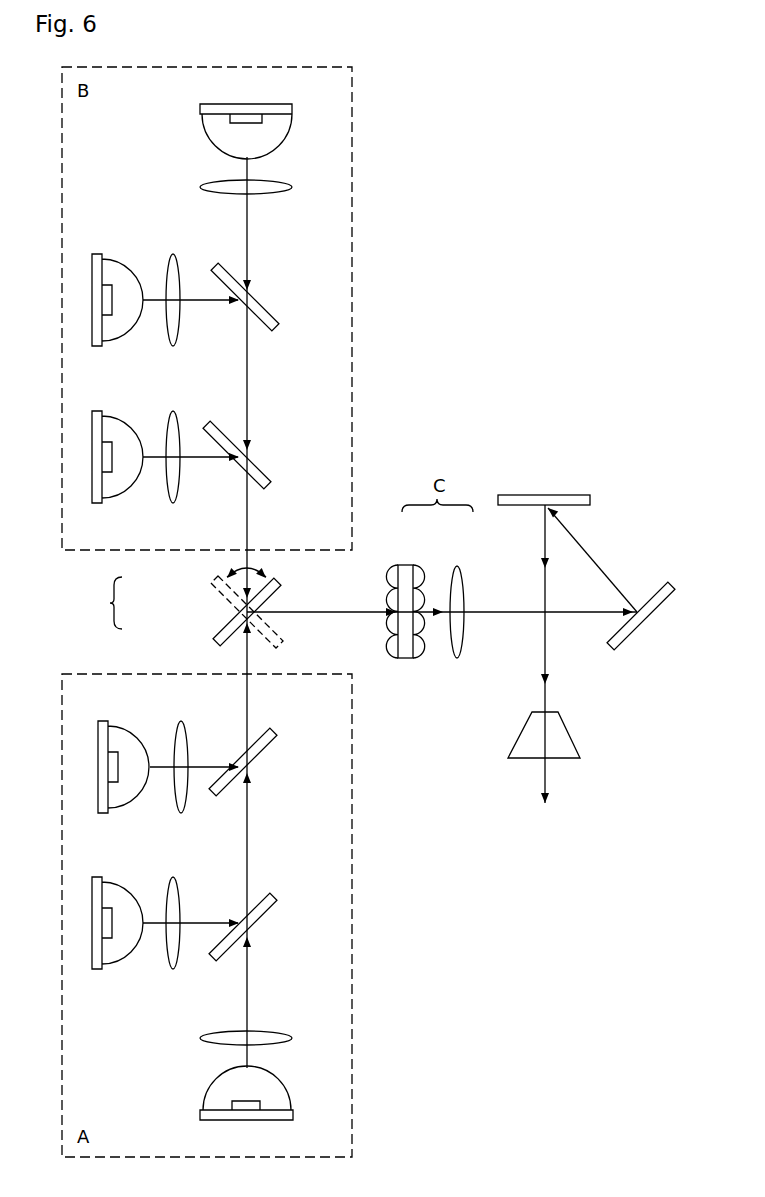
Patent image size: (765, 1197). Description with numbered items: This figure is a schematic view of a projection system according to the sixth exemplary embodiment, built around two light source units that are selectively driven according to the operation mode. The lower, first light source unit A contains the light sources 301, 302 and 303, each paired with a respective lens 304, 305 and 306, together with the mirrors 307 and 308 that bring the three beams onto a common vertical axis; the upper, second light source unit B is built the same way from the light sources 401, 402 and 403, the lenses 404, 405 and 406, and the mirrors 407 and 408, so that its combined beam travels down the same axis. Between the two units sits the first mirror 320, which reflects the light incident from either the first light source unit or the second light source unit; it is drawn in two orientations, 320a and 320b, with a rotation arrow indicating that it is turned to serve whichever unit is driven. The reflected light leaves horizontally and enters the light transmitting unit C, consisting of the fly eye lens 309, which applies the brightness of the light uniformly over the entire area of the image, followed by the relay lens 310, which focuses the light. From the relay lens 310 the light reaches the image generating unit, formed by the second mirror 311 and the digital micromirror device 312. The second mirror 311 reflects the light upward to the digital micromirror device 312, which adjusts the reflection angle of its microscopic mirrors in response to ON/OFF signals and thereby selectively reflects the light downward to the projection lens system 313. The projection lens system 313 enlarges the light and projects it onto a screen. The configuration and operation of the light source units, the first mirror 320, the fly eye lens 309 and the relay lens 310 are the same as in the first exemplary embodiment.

The first light source 301 is at (136, 728).
The second light source 302 is at (115, 885).
The third light source 303 is at (278, 1078).
The collimating lens 304 is at (189, 730).
The collimating lens 305 is at (175, 883).
The collimating lens 306 is at (270, 1032).
The dichroic mirror 307 is at (260, 897).
The dichroic mirror 308 is at (265, 745).
The fly eye lens 309 is at (405, 563).
The relay lens 310 is at (457, 563).
The second mirror 311 is at (650, 590).
The digital micromirror device 312 is at (528, 493).
The projection lens system 313 is at (565, 720).
The first mirror 320 is at (168, 598).
The mirror first position 320a is at (215, 626).
The mirror second position 320b is at (208, 590).
The first light source 401 is at (126, 497).
The second light source 402 is at (113, 341).
The third light source 403 is at (283, 142).
The collimating lens 404 is at (180, 497).
The collimating lens 405 is at (178, 341).
The collimating lens 406 is at (283, 195).
The dichroic mirror 407 is at (262, 330).
The dichroic mirror 408 is at (260, 468).